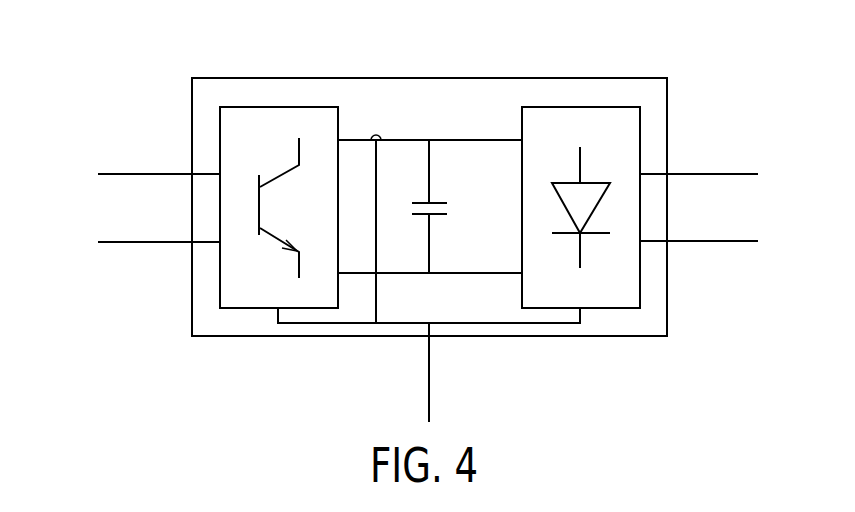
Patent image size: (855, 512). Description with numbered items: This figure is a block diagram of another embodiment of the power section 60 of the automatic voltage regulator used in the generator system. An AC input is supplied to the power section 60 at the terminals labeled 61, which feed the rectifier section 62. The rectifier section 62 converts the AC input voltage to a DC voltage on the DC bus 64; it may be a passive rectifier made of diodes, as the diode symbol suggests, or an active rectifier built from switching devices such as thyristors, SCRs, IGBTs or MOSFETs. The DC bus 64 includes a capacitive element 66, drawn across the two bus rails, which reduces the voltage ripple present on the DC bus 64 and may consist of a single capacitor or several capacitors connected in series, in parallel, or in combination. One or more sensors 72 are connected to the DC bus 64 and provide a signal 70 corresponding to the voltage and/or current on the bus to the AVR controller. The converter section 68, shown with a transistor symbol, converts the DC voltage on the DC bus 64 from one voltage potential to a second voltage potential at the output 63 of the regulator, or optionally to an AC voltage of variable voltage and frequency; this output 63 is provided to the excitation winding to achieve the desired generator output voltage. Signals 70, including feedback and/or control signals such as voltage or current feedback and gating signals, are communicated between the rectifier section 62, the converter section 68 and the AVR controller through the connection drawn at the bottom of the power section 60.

The power section 60 is at (431, 78).
The output terminals 61 is at (678, 167).
The rectifier section 62 is at (567, 299).
The output 63 is at (180, 166).
The DC bus 64 is at (478, 140).
The capacitive element 66 is at (457, 212).
The converter section 68 is at (265, 297).
The signals 70 is at (429, 365).
The sensors 72 is at (387, 125).